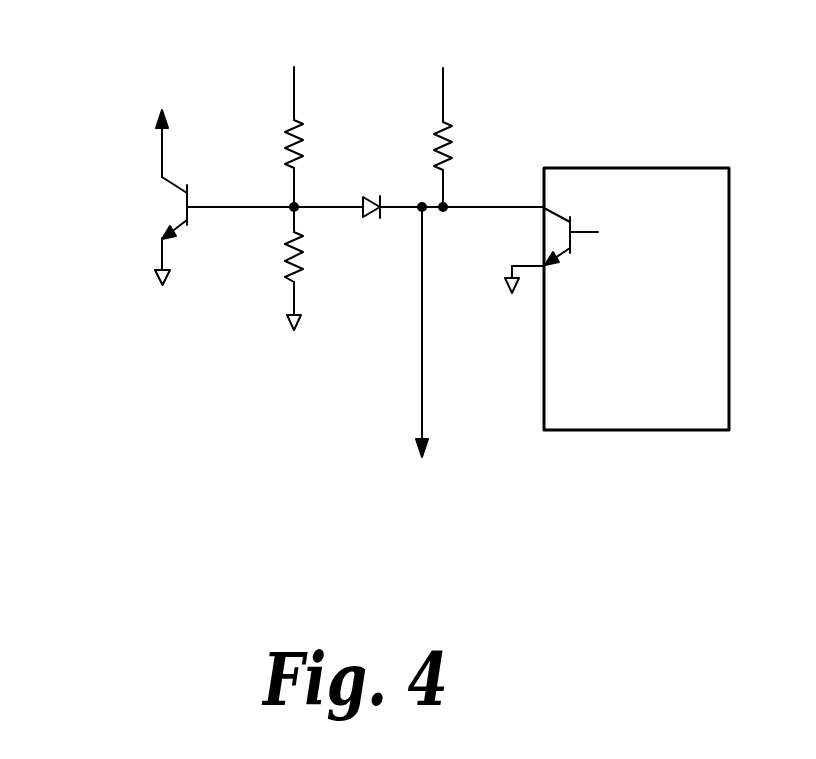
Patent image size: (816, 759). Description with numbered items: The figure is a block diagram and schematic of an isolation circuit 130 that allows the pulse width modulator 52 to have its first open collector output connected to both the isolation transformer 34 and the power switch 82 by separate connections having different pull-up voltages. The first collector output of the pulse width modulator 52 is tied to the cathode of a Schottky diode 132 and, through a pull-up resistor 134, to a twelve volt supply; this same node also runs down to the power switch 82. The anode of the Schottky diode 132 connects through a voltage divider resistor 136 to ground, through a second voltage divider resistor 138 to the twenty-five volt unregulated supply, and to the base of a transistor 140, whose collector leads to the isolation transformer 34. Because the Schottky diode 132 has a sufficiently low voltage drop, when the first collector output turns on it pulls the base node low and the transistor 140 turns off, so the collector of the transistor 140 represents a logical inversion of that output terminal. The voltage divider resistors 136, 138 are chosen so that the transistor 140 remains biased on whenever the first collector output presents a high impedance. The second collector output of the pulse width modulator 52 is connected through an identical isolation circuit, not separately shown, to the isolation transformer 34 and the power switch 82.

The isolation circuit 130 is at (107, 378).
The Schottky diode 132 is at (373, 223).
The pull-up resistor 134 is at (462, 138).
The voltage divider resistor 136 is at (312, 260).
The voltage divider resistor 138 is at (315, 142).
The transistor 140 is at (200, 187).
The pulse width modulator 52 is at (729, 220).
The isolation transformer 34 is at (131, 100).
The power switch 82 is at (430, 371).